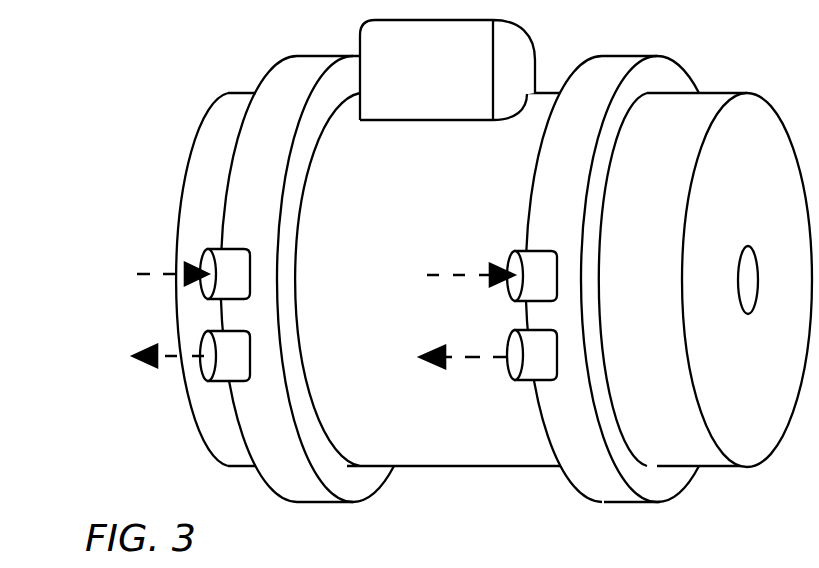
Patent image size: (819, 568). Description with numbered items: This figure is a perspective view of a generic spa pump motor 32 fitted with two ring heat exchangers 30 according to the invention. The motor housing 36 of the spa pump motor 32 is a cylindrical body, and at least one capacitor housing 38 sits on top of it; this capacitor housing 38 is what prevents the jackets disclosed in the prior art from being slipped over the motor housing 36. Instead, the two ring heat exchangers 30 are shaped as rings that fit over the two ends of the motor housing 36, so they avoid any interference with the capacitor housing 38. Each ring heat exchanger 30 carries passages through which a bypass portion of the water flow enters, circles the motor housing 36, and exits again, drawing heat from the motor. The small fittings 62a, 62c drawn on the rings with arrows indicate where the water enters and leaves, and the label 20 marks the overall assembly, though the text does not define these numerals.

The spa pump motor 32 is at (418, 283).
The ring heat exchanger 30 is at (307, 496).
The motor housing 36 is at (468, 185).
The capacitor housing 38 is at (442, 80).
The sensor 62a is at (223, 260).
The sensor 62c is at (227, 366).
The apparatus 20 is at (799, 563).